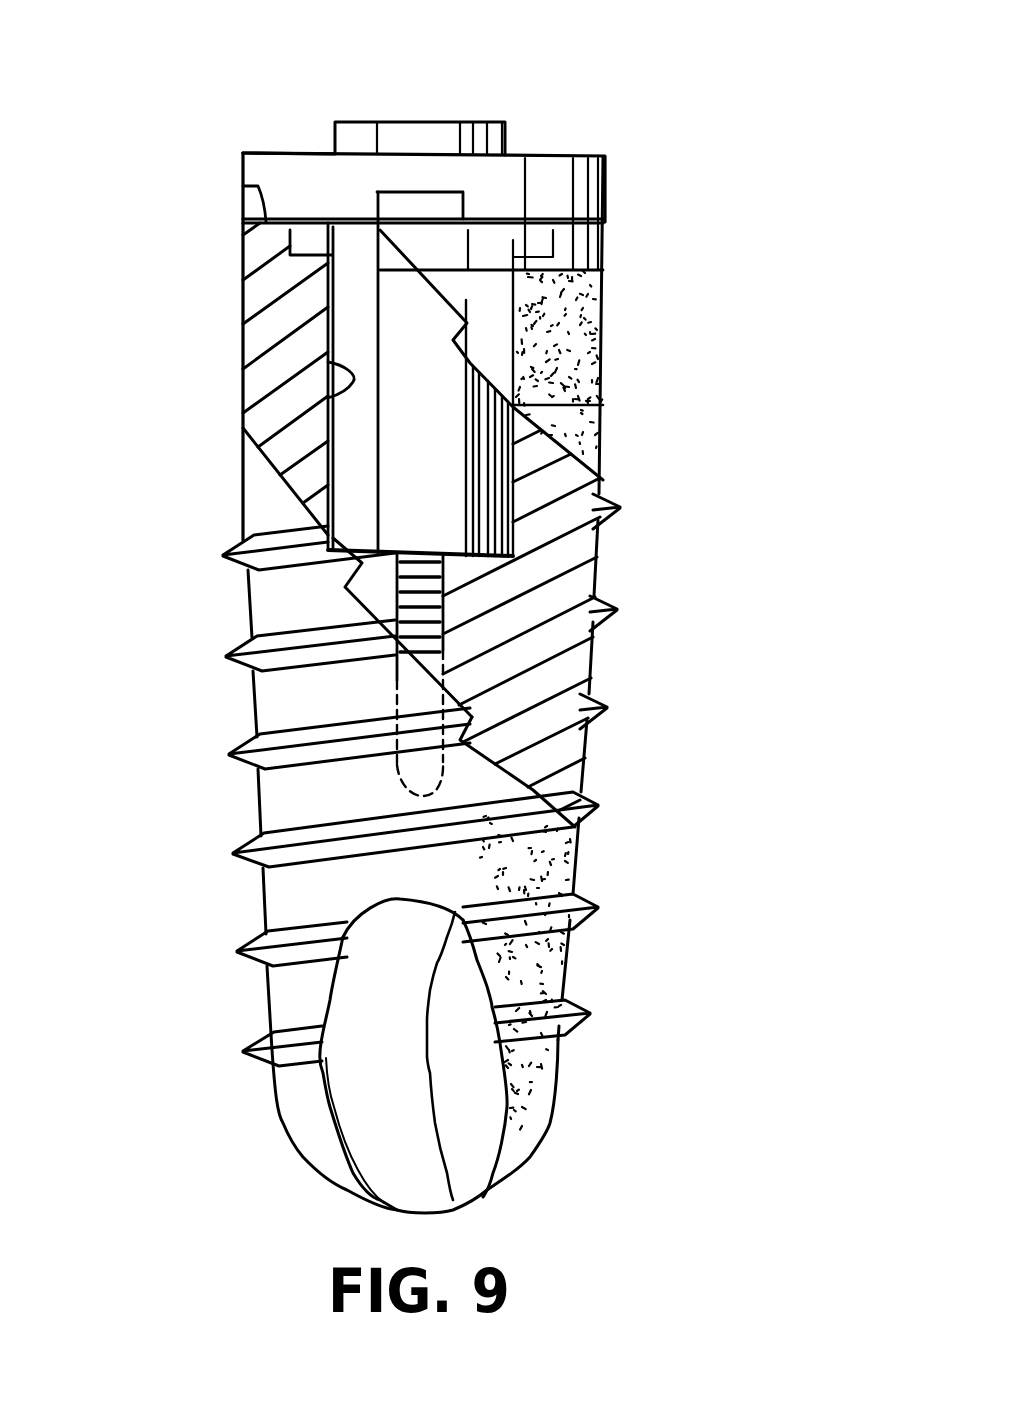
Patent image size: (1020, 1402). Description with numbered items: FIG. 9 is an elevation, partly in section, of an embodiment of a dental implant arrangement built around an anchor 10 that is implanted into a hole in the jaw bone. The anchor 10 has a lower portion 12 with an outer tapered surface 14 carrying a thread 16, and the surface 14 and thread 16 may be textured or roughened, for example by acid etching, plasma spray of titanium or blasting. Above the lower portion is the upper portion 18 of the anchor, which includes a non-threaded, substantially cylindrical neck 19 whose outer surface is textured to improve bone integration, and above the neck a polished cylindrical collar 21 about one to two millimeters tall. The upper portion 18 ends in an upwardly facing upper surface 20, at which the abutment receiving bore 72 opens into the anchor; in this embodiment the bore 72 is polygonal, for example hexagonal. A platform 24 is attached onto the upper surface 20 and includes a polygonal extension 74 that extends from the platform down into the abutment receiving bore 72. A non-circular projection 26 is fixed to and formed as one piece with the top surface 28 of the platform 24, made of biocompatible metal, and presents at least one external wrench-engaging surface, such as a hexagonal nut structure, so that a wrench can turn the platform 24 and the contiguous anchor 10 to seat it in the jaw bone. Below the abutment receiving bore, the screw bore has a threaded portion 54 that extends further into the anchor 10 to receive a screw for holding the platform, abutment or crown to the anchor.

The anchor 10 is at (247, 897).
The lower portion 12 is at (573, 867).
The outer tapered surface 14 is at (582, 654).
The thread 16 is at (597, 611).
The upper portion 18 is at (610, 444).
The neck 19 is at (603, 356).
The upper surface 20 is at (245, 185).
The polished cylindrical collar 21 is at (592, 254).
The platform 24 is at (578, 152).
The non-circular projection 26 is at (478, 127).
The top surface 28 is at (305, 152).
The threaded portion 54 is at (400, 597).
The abutment receiving bore 72 is at (330, 364).
The polygonal extension 74 is at (452, 443).